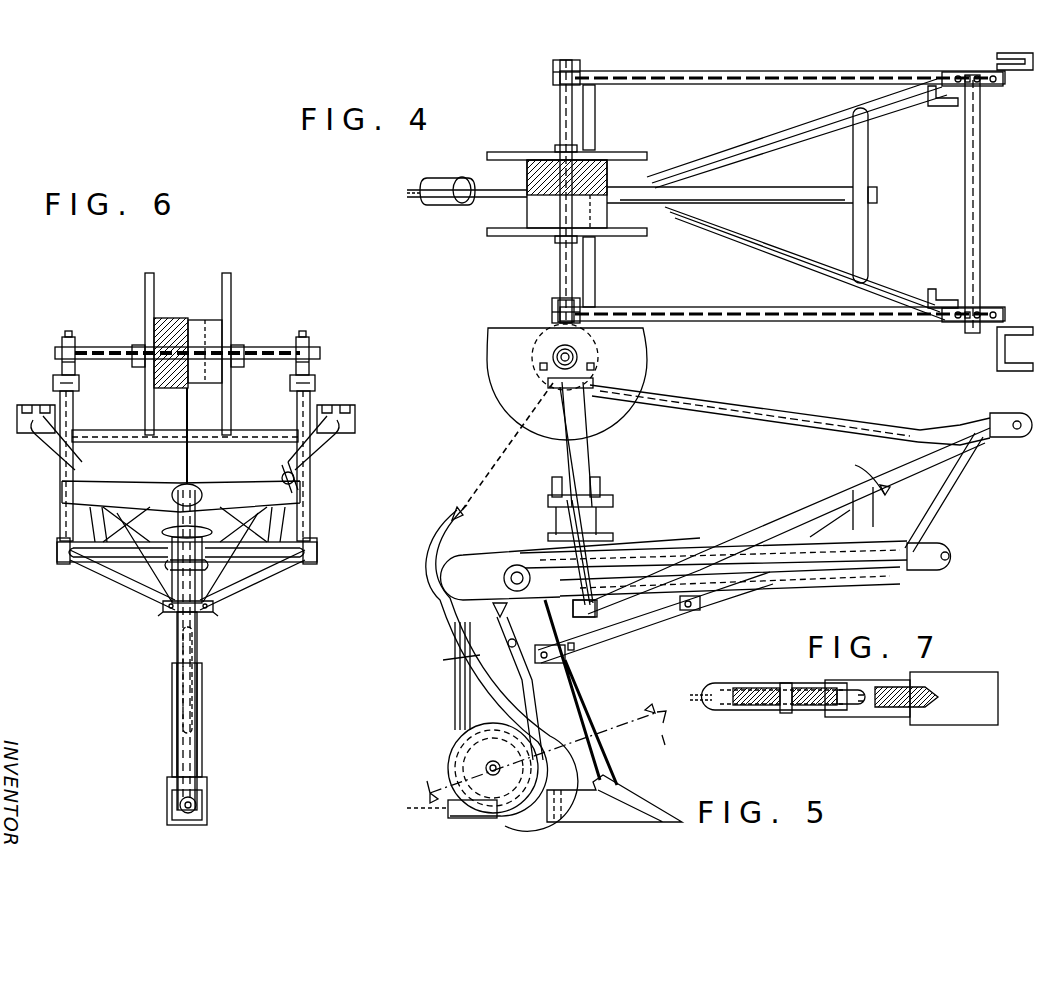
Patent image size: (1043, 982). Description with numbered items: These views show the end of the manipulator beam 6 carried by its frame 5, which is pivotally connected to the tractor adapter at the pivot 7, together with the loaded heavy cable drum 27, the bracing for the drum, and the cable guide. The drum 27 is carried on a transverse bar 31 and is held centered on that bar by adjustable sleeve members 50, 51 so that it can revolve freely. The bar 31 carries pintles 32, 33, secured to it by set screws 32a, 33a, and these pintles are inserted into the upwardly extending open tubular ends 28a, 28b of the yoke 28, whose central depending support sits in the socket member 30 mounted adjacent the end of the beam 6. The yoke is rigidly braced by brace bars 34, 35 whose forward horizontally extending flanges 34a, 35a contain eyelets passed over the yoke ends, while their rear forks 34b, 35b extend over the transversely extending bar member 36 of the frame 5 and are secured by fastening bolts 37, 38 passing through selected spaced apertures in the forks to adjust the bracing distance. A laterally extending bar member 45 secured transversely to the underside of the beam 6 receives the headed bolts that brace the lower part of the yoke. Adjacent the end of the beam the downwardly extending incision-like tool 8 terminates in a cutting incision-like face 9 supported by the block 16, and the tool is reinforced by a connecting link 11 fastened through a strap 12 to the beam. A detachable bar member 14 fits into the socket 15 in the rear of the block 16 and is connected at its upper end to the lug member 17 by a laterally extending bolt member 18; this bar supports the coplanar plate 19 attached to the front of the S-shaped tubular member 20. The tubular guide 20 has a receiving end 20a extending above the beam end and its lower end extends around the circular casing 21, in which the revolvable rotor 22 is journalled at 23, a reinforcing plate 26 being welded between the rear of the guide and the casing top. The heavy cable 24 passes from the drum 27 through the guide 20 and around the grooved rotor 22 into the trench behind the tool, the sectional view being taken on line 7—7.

In FIG. 6, the frame 5 is at (60, 451).
In FIG. 5, the frame 5 is at (896, 501).
In FIG. 6, the manipulator beam 6 is at (177, 648).
In FIG. 4, the manipulator beam 6 is at (771, 203).
In FIG. 5, the manipulator beam 6 is at (772, 518).
In FIG. 5, the pivotal connection 7 is at (541, 753).
In FIG. 5, the incision-like tool 8 is at (580, 700).
In FIG. 7, the incision-like tool 8 is at (897, 717).
In FIG. 5, the cutting incision-like face 9 is at (662, 798).
In FIG. 7, the cutting incision-like face 9 is at (984, 725).
In FIG. 5, the connecting link 11 is at (632, 628).
In FIG. 5, the strap 12 is at (702, 605).
In FIG. 5, the detachable bar member 14 is at (612, 755).
In FIG. 5, the socket 15 is at (582, 828).
In FIG. 6, the block 16 is at (206, 790).
In FIG. 5, the block 16 is at (602, 825).
In FIG. 5, the lug member 17 is at (571, 649).
In FIG. 5, the bolt member 18 is at (512, 658).
In FIG. 5, the coplanar plate 19 is at (572, 658).
In FIG. 6, the S-shaped tubular member 20 is at (135, 593).
In FIG. 4, the S-shaped tubular member 20 is at (446, 175).
In FIG. 5, the S-shaped tubular member 20 is at (430, 583).
In FIG. 6, the receiving end of cable guide 20a is at (202, 496).
In FIG. 4, the receiving end of cable guide 20a is at (467, 209).
In FIG. 5, the receiving end of cable guide 20a is at (457, 508).
In FIG. 6, the circular casing 21 is at (178, 750).
In FIG. 5, the circular casing 21 is at (448, 768).
In FIG. 7, the circular casing 21 is at (754, 712).
In FIG. 5, the revolvable rotor 22 is at (457, 819).
In FIG. 7, the revolvable rotor 22 is at (824, 709).
In FIG. 5, the journal 23 is at (497, 776).
In FIG. 7, the journal 23 is at (786, 715).
In FIG. 6, the heavy cable 24 is at (184, 468).
In FIG. 4, the heavy cable 24 is at (418, 184).
In FIG. 5, the heavy cable 24 is at (412, 811).
In FIG. 7, the heavy cable 24 is at (712, 689).
In FIG. 6, the plate 26 is at (193, 689).
In FIG. 5, the plate 26 is at (472, 723).
In FIG. 6, the heavy cable drum 27 is at (228, 288).
In FIG. 4, the heavy cable drum 27 is at (620, 152).
In FIG. 5, the heavy cable drum 27 is at (642, 363).
In FIG. 6, the yoke 28 is at (300, 480).
In FIG. 5, the yoke 28 is at (589, 468).
In FIG. 6, the upwardly extending tubular end of yoke 28a is at (53, 378).
In FIG. 6, the upwardly extending tubular end of yoke 28b is at (316, 384).
In FIG. 5, the upwardly extending tubular end of yoke 28b is at (457, 368).
In FIG. 5, the socket member 30 is at (607, 535).
In FIG. 6, the transverse bar 31 is at (108, 349).
In FIG. 4, the transverse bar 31 is at (560, 112).
In FIG. 6, the pintle 32 is at (53, 390).
In FIG. 6, the set screw 32a is at (68, 332).
In FIG. 6, the pintle 33 is at (310, 390).
In FIG. 6, the set screw 33a is at (304, 332).
In FIG. 4, the brace bar 34 is at (677, 70).
In FIG. 4, the horizontally extending flange 34a is at (553, 74).
In FIG. 4, the fork 34b is at (991, 87).
In FIG. 5, the brace bar 35 is at (762, 408).
In FIG. 6, the horizontally extending flange 35a is at (316, 376).
In FIG. 4, the horizontally extending flange 35a is at (552, 311).
In FIG. 5, the horizontally extending flange 35a is at (530, 383).
In FIG. 4, the fork 35b is at (952, 325).
In FIG. 5, the fork 35b is at (1007, 411).
In FIG. 4, the transversely extending bar member 36 is at (967, 148).
In FIG. 4, the fastening bolt 37 is at (959, 100).
In FIG. 4, the fastening bolt 38 is at (1012, 72).
In FIG. 6, the laterally extending bar member 45 is at (210, 612).
In FIG. 5, the laterally extending bar member 45 is at (598, 611).
In FIG. 6, the adjustable sleeve member 50 is at (150, 333).
In FIG. 6, the adjustable sleeve member 51 is at (244, 350).